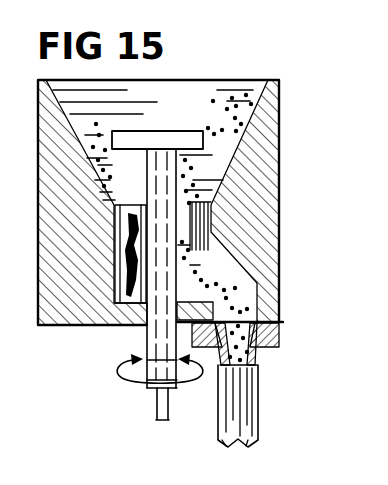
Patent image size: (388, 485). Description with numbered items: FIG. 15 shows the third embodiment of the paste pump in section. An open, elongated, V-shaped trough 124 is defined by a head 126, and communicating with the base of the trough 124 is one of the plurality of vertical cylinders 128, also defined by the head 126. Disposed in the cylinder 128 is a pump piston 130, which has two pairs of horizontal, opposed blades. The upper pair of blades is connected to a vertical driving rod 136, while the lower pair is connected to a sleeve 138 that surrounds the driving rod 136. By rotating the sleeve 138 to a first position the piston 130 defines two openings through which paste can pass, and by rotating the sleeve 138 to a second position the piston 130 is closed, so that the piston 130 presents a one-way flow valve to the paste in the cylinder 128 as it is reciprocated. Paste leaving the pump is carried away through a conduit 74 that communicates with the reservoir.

The conduit 74 is at (258, 407).
The V-shaped trough 124 is at (214, 92).
The head 126 is at (279, 165).
The vertical cylinders 128 is at (215, 243).
The pump piston 130 is at (173, 131).
The vertical driving rod 136 is at (157, 400).
The sleeve 138 is at (147, 337).